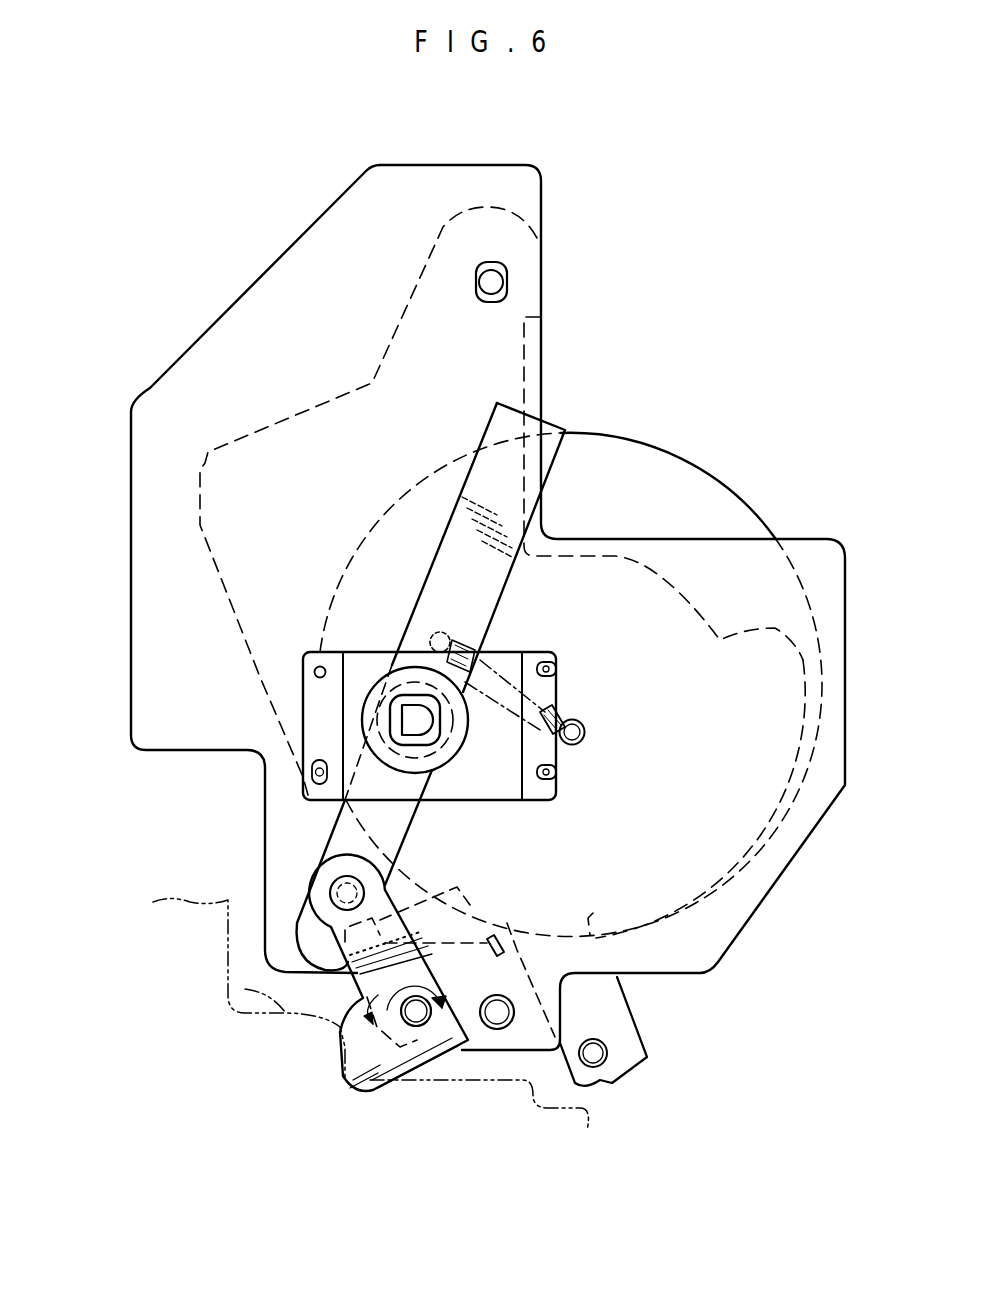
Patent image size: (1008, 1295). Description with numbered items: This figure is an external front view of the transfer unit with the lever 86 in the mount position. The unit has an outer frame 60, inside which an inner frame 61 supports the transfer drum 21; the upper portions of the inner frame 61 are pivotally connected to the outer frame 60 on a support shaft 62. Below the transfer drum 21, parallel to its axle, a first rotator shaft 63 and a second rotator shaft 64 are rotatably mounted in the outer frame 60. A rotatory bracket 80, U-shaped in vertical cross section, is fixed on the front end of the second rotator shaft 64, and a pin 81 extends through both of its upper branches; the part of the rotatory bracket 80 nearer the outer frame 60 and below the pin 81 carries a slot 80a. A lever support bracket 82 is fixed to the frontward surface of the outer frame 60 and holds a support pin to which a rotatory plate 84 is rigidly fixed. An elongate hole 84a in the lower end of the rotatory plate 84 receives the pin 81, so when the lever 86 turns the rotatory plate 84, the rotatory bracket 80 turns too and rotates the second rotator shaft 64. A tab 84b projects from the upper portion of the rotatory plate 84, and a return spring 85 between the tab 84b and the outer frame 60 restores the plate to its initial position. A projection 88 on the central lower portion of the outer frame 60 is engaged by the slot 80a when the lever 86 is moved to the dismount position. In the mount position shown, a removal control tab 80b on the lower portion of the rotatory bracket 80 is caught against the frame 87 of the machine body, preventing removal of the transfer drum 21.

The outer frame 60 is at (525, 180).
The inner frame 61 is at (412, 300).
The support shaft 62 is at (503, 282).
The transfer drum 21 is at (725, 492).
The lever 86 is at (500, 447).
The tab 84b is at (438, 634).
The lever support bracket 82 is at (506, 654).
The return spring 85 is at (576, 722).
The rotatory plate 84 is at (395, 820).
The elongate hole 84a is at (300, 923).
The pin 81 is at (338, 882).
The rotatory bracket 80 is at (418, 973).
The slot 80a is at (422, 905).
The removal control tab 80b is at (362, 1095).
The projection 88 is at (503, 943).
The frame 87 is at (245, 989).
The second rotator shaft 64 is at (416, 1012).
The first rotator shaft 63 is at (497, 1020).